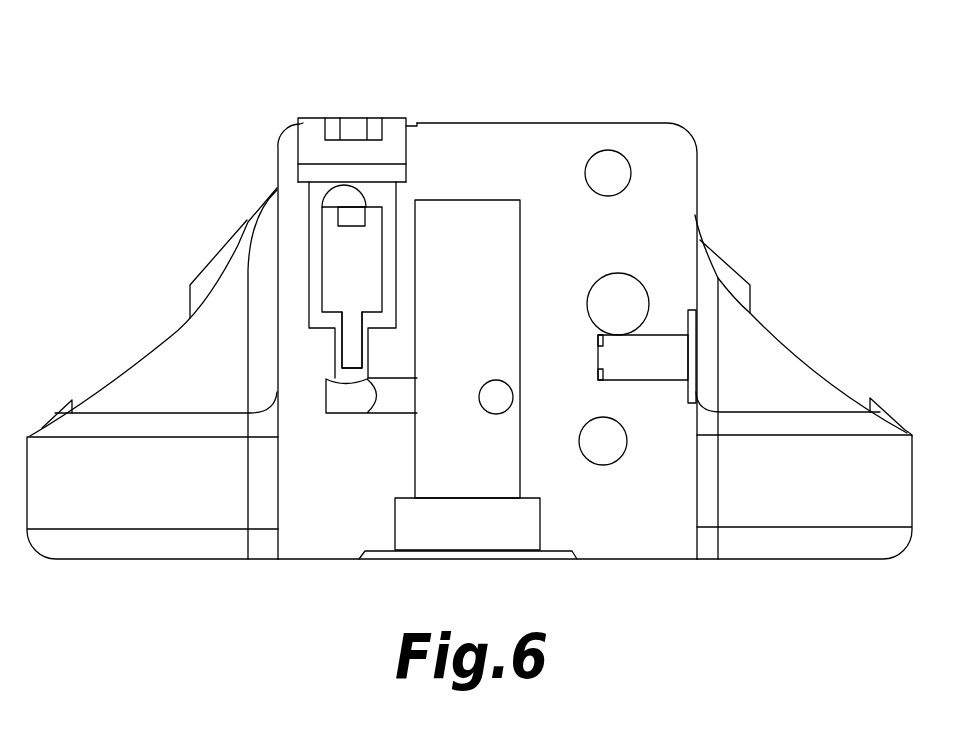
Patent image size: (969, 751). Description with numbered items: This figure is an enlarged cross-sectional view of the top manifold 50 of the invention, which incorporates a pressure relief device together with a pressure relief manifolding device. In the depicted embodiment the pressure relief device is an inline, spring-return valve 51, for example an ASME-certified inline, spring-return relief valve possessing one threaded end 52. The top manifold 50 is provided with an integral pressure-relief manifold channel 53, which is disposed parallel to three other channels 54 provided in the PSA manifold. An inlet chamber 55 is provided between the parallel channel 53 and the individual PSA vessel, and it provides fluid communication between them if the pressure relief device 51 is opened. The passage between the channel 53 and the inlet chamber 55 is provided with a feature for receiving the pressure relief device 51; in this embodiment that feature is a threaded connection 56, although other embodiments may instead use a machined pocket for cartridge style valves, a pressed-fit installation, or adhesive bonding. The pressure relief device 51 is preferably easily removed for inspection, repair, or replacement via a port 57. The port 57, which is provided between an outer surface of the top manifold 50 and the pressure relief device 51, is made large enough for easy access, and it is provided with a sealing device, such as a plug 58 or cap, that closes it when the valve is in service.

The top manifold 50 is at (531, 110).
The inline, spring-return valve 51 is at (320, 263).
The threaded end 52 is at (368, 355).
The pressure-relief manifold channel 53 is at (326, 200).
The channels 54 is at (590, 175).
The inlet chamber 55 is at (487, 291).
The threaded connection 56 is at (335, 356).
The port 57 is at (407, 155).
The plug 58 is at (313, 122).